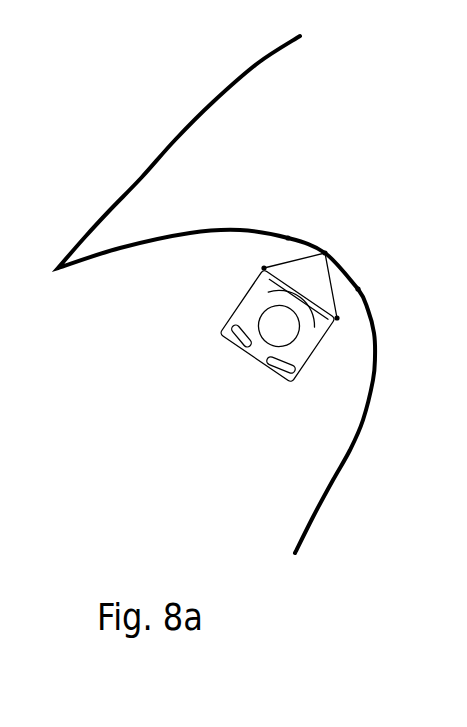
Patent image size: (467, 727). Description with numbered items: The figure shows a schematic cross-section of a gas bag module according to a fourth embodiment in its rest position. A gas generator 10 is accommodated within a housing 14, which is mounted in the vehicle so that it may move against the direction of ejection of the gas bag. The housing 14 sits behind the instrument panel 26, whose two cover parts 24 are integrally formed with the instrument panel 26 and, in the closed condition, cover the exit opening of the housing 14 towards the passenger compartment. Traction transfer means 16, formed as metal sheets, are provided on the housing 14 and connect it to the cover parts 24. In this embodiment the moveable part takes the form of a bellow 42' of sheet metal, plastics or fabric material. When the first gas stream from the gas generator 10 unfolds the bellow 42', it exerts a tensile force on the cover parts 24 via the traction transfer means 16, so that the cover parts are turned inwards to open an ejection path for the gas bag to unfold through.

The gas generator 10 is at (279, 328).
The housing 14 is at (251, 315).
The traction transfer means 16 is at (290, 262).
The cover parts 24 is at (348, 270).
The instrument panel 26 is at (373, 385).
The bellow 42' is at (238, 373).